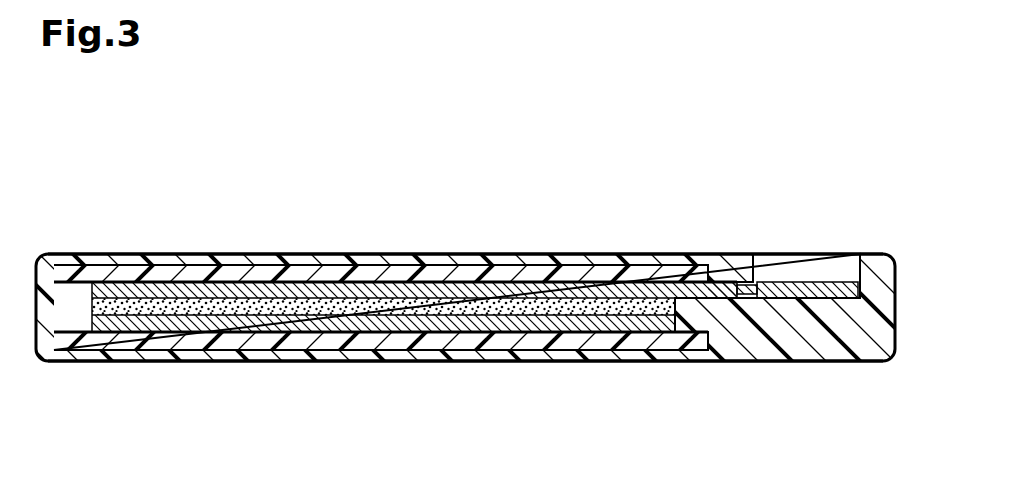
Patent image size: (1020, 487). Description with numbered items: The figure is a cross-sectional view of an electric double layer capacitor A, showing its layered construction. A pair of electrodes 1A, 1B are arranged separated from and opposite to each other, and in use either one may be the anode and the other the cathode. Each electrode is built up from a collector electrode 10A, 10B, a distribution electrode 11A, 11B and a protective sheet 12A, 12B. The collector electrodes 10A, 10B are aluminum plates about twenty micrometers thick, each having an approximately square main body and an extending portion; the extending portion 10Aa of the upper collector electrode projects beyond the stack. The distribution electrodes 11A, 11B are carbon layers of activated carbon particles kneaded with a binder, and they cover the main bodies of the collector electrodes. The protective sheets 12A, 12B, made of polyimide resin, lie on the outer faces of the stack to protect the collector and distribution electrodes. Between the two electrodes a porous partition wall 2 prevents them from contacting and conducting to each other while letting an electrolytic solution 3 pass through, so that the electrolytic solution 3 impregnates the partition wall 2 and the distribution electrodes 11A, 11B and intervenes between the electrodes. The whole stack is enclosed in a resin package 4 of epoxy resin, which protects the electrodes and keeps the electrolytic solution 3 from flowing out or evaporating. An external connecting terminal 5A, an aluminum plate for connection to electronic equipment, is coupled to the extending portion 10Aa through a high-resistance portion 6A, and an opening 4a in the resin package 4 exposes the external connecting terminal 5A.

The electric double layer capacitor A is at (99, 156).
The electrode 1A is at (325, 253).
The electrode 1B is at (325, 367).
The partition wall 2 is at (130, 267).
The electrolytic solution 3 is at (91, 258).
The resin package 4 is at (843, 358).
The opening 4a is at (855, 268).
The external connecting terminal 5A is at (803, 283).
The high-resistance portion 6A is at (748, 283).
The collector electrode 10A is at (412, 290).
The extending portion 10Aa is at (722, 282).
The collector electrode 10B is at (407, 326).
The distribution electrode 11A is at (537, 306).
The distribution electrode 11B is at (532, 318).
The protective sheet 12A is at (199, 279).
The protective sheet 12B is at (180, 342).